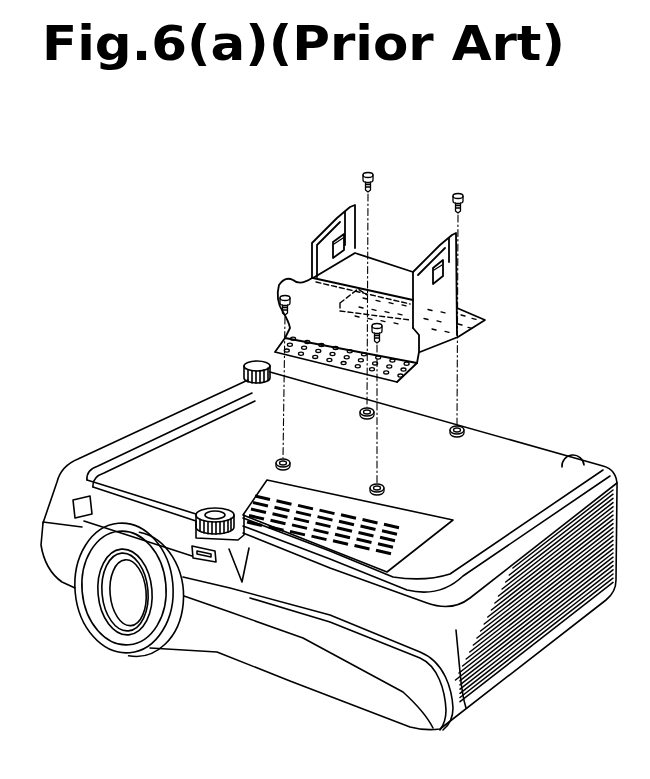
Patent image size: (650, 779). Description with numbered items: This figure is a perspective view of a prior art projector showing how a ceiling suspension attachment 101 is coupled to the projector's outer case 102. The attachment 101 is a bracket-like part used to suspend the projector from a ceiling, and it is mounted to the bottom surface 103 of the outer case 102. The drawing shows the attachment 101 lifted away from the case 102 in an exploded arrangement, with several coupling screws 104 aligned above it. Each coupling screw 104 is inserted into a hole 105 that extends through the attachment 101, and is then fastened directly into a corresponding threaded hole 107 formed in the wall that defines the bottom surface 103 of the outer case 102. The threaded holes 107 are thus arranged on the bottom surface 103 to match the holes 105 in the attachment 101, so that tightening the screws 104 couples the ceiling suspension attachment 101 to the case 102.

The ceiling suspension attachment 101 is at (466, 313).
The outer case 102 is at (103, 448).
The bottom surface 103 is at (170, 442).
The coupling screw 104 is at (372, 172).
The hole 105 is at (310, 266).
The threaded hole 107 is at (360, 412).